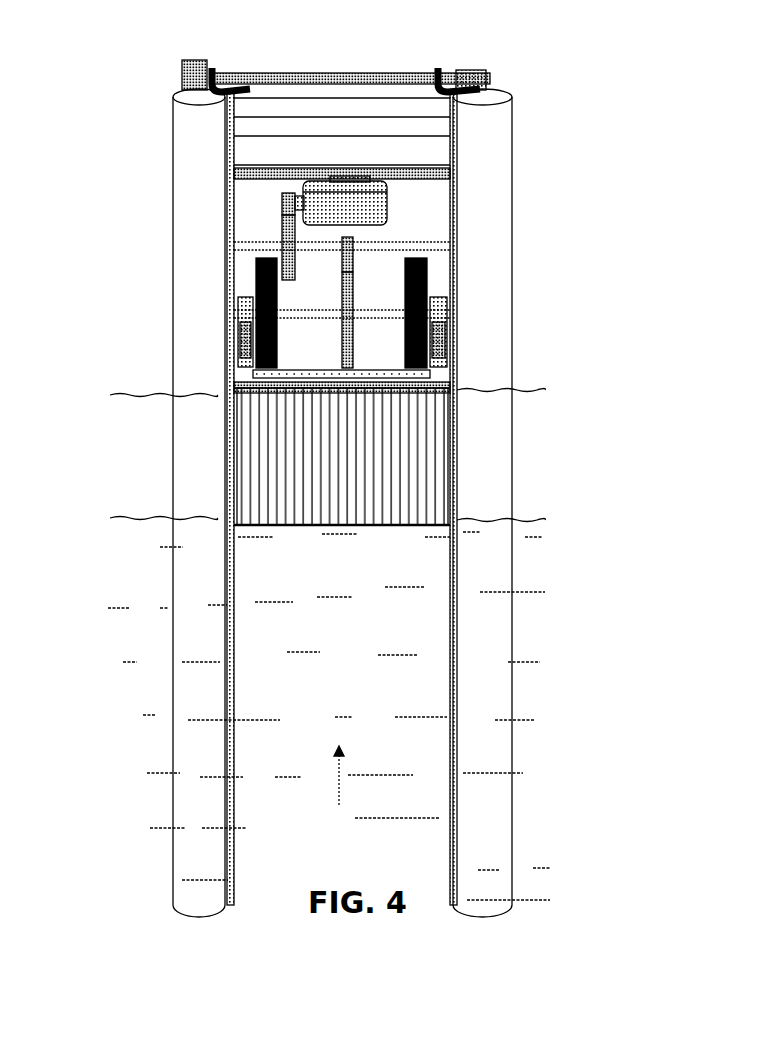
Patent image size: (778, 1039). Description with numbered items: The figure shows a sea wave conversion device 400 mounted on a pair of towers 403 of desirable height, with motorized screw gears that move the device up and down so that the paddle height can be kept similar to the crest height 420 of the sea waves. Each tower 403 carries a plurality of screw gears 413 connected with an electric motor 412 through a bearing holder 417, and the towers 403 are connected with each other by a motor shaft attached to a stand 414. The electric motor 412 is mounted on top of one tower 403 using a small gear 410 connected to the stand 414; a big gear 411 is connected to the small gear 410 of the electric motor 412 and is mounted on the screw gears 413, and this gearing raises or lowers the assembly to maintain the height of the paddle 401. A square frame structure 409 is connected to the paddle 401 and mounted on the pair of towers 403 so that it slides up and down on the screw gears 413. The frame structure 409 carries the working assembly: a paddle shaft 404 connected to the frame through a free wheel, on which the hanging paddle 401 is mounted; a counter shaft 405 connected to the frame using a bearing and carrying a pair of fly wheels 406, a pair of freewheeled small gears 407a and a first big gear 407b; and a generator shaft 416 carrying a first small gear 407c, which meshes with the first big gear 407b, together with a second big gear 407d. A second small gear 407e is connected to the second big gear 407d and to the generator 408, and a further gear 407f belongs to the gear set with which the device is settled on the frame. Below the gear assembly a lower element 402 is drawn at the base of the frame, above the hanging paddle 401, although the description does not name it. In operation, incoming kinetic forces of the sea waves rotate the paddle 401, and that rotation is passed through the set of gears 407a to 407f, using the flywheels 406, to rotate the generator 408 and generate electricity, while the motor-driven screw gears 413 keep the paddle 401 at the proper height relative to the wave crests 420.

The sea wave conversion device 400 is at (148, 70).
The paddle 401 is at (385, 487).
The plate 402 is at (240, 378).
The tower 403 is at (197, 150).
The paddle shaft 404 is at (361, 372).
The counter shaft 405 is at (308, 314).
The fly wheels 406 is at (279, 290).
The small gears 407a is at (240, 305).
The first big gear 407b is at (353, 306).
The first small gear 407c is at (353, 256).
The second big gear 407d is at (283, 246).
The second small gear 407e is at (287, 215).
The gear 407f is at (240, 352).
The generator 408 is at (388, 202).
The square frame structure 409 is at (236, 174).
The small gear 410 is at (433, 72).
The big gear 411 is at (451, 97).
The electric motor 412 is at (186, 60).
The screw gears 413 is at (451, 138).
The stand 414 is at (487, 80).
The generator shaft 416 is at (440, 248).
The bearing holder 417 is at (451, 118).
The crest height 420 is at (137, 397).